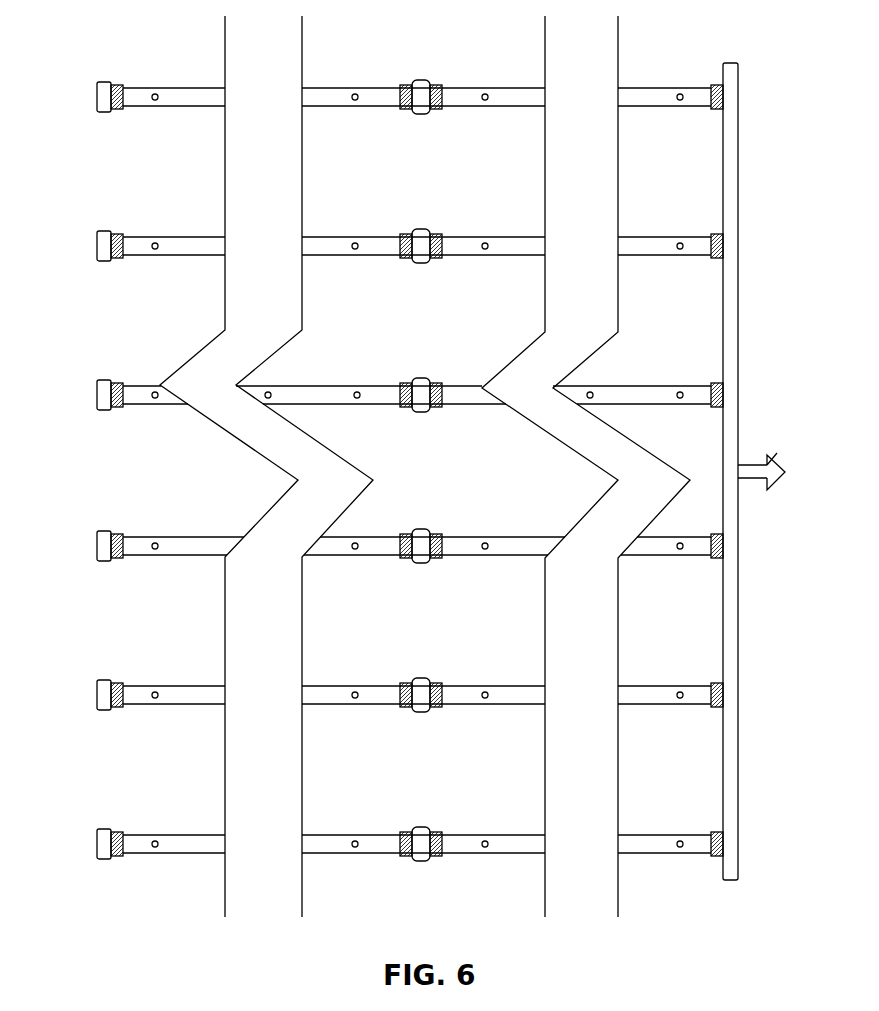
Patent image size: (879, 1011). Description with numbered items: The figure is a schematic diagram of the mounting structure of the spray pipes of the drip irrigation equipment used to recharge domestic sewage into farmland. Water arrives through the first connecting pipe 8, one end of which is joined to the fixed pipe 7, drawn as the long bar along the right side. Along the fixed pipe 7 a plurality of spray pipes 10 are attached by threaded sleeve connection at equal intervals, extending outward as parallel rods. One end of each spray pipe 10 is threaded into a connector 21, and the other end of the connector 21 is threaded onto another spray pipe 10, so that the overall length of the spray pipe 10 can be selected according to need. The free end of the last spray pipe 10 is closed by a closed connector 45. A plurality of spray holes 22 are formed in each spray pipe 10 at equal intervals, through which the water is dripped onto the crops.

The fixed pipe 7 is at (724, 248).
The first connecting pipe 8 is at (772, 488).
The spray pipe 10 is at (175, 545).
The connector 21 is at (427, 855).
The spray hole 22 is at (687, 237).
The closed connector 45 is at (95, 533).